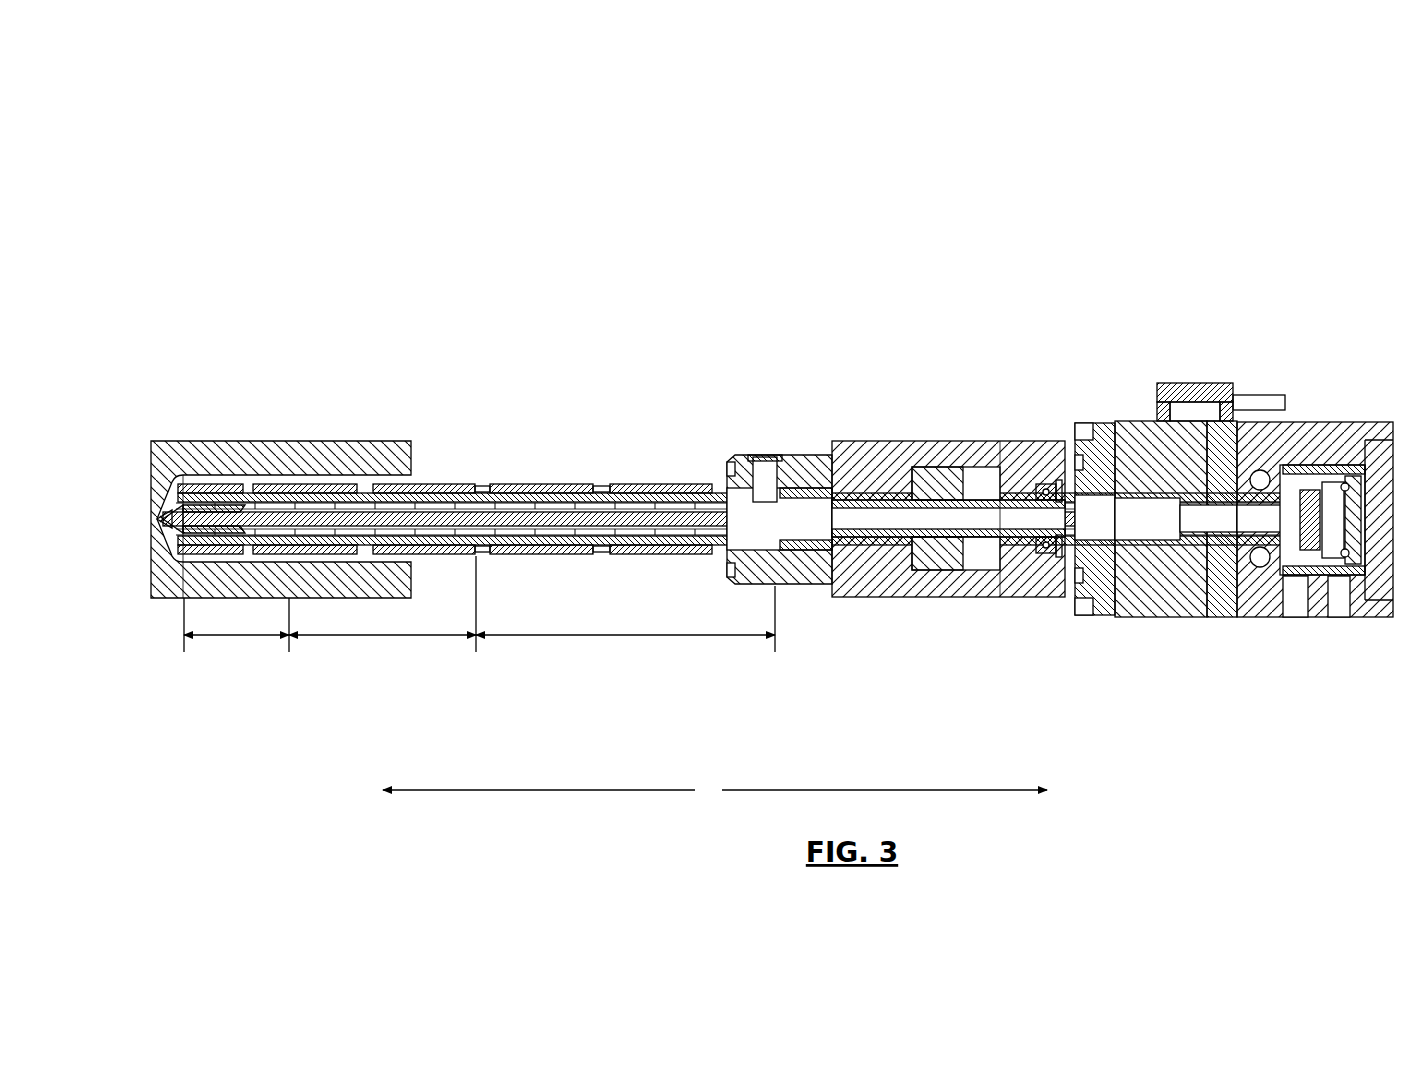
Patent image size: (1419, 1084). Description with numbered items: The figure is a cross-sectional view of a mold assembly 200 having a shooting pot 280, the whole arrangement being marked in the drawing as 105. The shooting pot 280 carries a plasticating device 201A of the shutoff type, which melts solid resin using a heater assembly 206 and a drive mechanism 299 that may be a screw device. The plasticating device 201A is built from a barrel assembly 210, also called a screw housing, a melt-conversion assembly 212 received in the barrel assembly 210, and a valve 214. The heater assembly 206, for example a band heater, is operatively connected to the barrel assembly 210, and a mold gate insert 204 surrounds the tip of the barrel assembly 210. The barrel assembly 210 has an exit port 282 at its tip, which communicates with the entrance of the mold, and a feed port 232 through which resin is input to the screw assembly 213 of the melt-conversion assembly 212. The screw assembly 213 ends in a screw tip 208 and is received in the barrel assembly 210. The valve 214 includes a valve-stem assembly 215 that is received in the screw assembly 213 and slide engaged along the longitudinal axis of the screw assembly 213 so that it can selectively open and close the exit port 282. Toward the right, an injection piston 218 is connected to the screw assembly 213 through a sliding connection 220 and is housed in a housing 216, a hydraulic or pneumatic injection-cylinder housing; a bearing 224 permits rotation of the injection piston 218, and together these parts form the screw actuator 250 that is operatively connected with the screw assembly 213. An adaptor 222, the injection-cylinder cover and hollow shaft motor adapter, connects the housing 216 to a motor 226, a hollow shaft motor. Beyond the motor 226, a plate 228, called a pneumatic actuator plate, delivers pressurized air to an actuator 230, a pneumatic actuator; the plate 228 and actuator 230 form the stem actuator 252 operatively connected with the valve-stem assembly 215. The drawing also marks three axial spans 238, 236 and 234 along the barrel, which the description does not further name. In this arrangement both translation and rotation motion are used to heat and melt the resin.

The system 105 is at (760, 133).
The mold assembly 200 is at (684, 222).
The plasticating device 201A is at (622, 312).
The mold gate insert 204 is at (163, 600).
The heater assembly 206 is at (230, 445).
The screw tip 208 is at (200, 445).
The barrel assembly 210 is at (167, 445).
The melt-conversion assembly 212 is at (316, 378).
The screw assembly 213 is at (335, 445).
The valve 214 is at (488, 378).
The valve-stem assembly 215 is at (513, 485).
The housing 216 is at (853, 440).
The injection piston 218 is at (880, 500).
The sliding connection 220 is at (848, 542).
The adaptor 222 is at (1033, 440).
The bearing 224 is at (1040, 552).
The motor 226 is at (1125, 420).
The plate 228 is at (1262, 617).
The actuator 230 is at (1308, 545).
The feed port 232 is at (765, 475).
The length section 234 is at (612, 640).
The length section 236 is at (392, 640).
The length section 238 is at (238, 640).
The screw actuator 250 is at (853, 318).
The stem actuator 252 is at (1126, 298).
The shooting pot 280 is at (193, 735).
The exit port 282 is at (137, 535).
The drive mechanism 299 is at (604, 485).